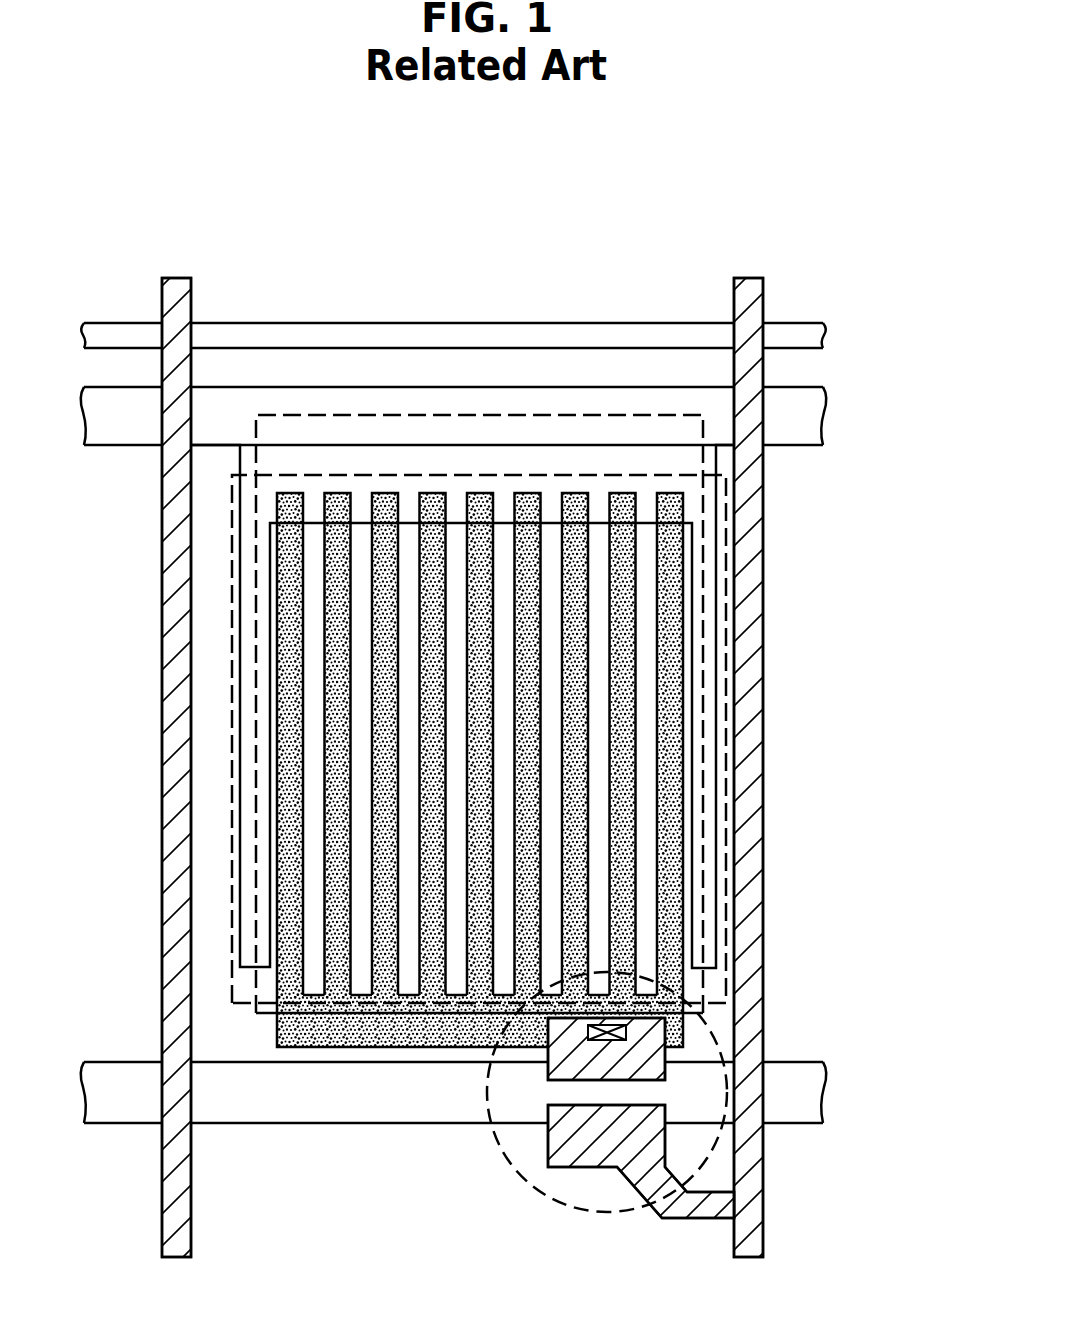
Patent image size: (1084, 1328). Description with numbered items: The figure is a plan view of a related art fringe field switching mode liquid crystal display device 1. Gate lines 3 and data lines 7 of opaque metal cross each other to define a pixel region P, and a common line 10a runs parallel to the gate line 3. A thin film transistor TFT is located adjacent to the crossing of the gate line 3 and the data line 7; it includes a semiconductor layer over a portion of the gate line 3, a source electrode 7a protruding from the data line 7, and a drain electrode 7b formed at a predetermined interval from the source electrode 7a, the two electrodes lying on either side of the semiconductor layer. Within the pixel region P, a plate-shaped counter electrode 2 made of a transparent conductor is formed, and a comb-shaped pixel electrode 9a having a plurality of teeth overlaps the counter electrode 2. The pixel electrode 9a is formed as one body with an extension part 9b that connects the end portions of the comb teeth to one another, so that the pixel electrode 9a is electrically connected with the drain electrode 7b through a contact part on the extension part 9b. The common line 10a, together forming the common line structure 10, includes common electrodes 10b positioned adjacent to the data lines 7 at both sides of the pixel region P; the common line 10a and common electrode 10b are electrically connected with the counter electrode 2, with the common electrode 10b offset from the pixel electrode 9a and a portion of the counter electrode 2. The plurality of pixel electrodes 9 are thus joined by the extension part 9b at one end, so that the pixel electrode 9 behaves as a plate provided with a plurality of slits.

The array substrate / pixel 1 is at (368, 1220).
The counter electrode 2 is at (698, 990).
The gate line 3 is at (793, 326).
The data line 7 is at (755, 601).
The source electrode 7a is at (587, 1153).
The drain electrode 7b is at (655, 1037).
The pixel electrode 9 is at (367, 770).
The pixel electrode 9a is at (292, 936).
The extension part 9b is at (300, 1032).
The common line 10 is at (528, 695).
The common line 10a is at (808, 433).
The common electrode 10b is at (718, 541).
The pixel region P is at (731, 738).
The thin film transistor TFT is at (533, 1188).